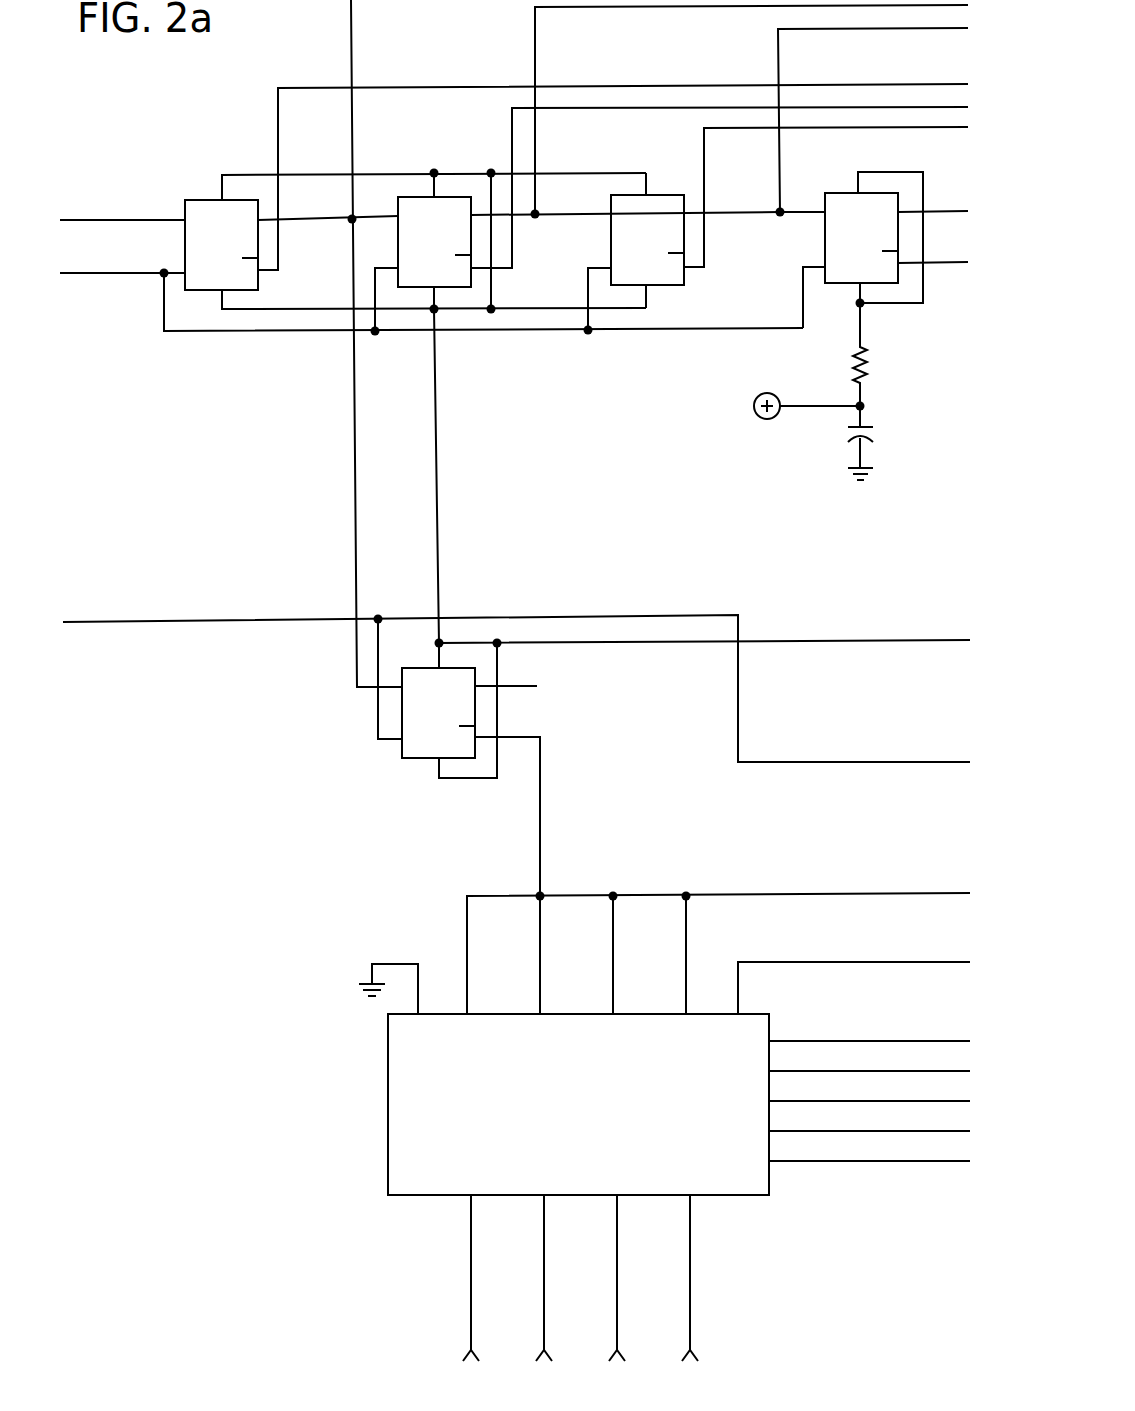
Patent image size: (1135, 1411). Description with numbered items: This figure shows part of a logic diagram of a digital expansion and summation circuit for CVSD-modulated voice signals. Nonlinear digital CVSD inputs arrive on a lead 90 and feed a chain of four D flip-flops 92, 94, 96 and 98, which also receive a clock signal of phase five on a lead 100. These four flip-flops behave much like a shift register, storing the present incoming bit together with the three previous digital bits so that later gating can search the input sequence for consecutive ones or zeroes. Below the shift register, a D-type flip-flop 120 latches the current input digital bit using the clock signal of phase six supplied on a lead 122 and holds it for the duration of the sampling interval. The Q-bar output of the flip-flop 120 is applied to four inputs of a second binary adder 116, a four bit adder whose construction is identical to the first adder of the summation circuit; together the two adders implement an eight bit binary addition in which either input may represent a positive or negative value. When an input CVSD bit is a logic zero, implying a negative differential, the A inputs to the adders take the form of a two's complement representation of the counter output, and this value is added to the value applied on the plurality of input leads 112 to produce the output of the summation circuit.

The lead 90 is at (167, 217).
The D flip-flop 92 is at (208, 200).
The D flip-flop 94 is at (398, 250).
The D flip-flop 96 is at (611, 249).
The D flip-flop 98 is at (840, 193).
The lead 100 is at (150, 275).
The D-type flip-flop 120 is at (402, 752).
The lead 122 is at (182, 622).
The second binary adder 116 is at (388, 1112).
The leads 112 is at (446, 1278).